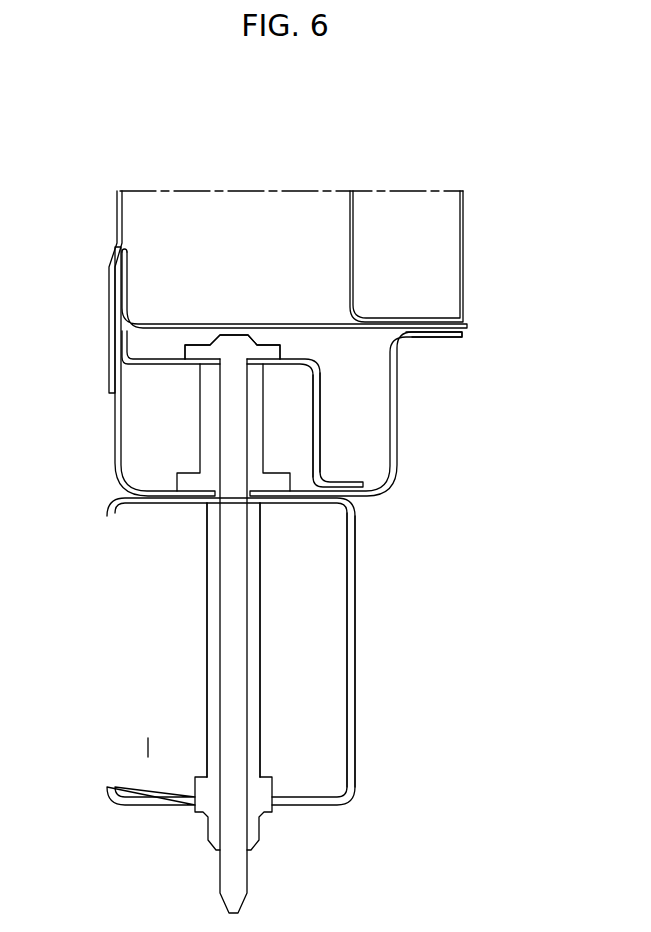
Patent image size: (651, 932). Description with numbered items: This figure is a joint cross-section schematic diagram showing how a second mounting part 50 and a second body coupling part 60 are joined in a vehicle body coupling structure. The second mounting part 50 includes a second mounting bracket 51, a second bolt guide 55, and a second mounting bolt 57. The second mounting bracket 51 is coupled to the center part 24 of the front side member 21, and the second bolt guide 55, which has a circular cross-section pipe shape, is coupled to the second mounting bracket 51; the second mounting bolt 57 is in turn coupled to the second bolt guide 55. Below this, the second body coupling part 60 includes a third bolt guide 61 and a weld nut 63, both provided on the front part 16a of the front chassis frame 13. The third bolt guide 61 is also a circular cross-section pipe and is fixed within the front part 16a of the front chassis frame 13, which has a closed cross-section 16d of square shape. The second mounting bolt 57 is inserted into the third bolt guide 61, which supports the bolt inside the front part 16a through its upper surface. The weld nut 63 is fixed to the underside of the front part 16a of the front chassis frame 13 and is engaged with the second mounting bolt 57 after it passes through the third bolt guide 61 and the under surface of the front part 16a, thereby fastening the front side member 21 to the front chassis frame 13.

The front chassis frame 13 is at (376, 718).
The front part of the front chassis frame 16a is at (352, 600).
The closed cross-section 16d is at (140, 750).
The front side member 21 is at (418, 448).
The center part of the front side member 24 is at (393, 372).
The second mounting part 50 is at (170, 405).
The second mounting bracket 51 is at (316, 427).
The second bolt guide 55 is at (212, 450).
The second mounting bolt 57 is at (232, 585).
The second body coupling part 60 is at (286, 661).
The third bolt guide 61 is at (215, 638).
The weld nut 63 is at (257, 833).